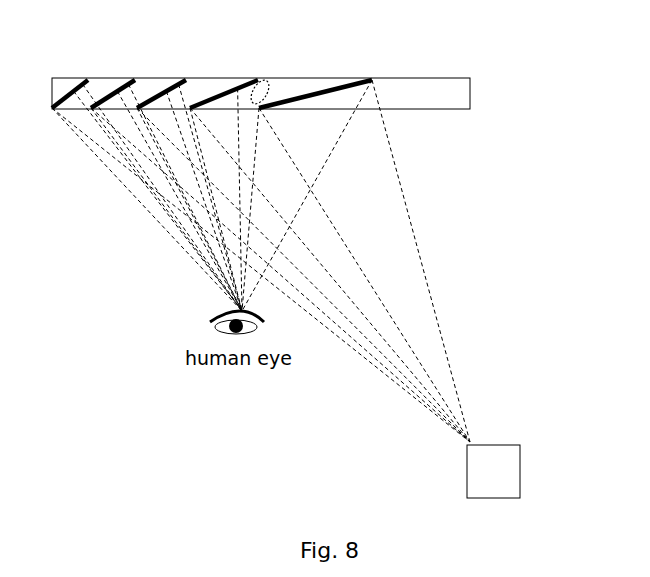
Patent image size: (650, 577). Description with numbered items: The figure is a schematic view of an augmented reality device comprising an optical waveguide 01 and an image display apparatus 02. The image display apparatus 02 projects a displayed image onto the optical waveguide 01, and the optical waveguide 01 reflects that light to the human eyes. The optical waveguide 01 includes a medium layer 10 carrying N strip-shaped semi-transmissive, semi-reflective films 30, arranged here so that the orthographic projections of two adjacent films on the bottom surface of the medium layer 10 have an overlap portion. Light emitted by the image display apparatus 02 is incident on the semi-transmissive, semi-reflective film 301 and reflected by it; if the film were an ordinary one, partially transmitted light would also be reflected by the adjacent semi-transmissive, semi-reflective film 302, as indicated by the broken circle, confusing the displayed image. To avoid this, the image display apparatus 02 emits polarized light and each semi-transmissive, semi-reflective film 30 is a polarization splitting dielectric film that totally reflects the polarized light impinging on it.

The optical waveguide 01 is at (486, 93).
The image display apparatus 02 is at (487, 462).
The medium layer 10 is at (418, 98).
The semi-transmissive, semi-reflective film 30 is at (215, 68).
The semi-transmissive, semi-reflective film 301 is at (308, 83).
The semi-transmissive, semi-reflective film 302 is at (238, 53).